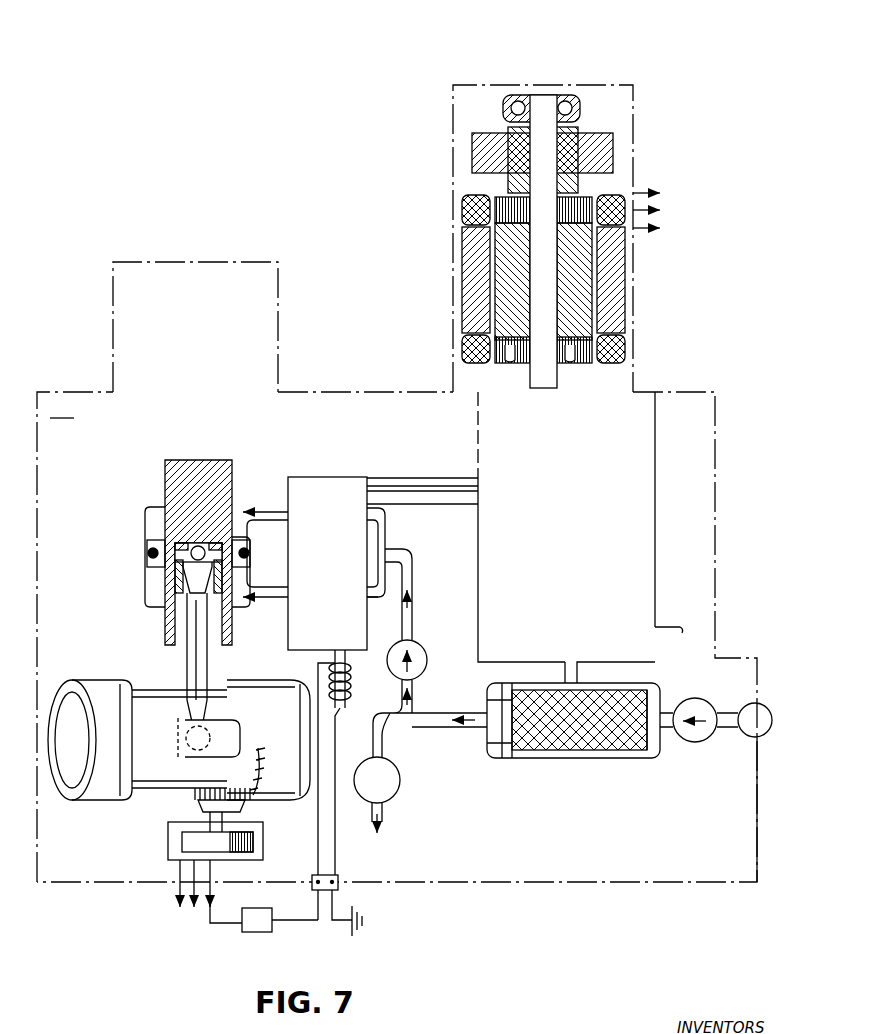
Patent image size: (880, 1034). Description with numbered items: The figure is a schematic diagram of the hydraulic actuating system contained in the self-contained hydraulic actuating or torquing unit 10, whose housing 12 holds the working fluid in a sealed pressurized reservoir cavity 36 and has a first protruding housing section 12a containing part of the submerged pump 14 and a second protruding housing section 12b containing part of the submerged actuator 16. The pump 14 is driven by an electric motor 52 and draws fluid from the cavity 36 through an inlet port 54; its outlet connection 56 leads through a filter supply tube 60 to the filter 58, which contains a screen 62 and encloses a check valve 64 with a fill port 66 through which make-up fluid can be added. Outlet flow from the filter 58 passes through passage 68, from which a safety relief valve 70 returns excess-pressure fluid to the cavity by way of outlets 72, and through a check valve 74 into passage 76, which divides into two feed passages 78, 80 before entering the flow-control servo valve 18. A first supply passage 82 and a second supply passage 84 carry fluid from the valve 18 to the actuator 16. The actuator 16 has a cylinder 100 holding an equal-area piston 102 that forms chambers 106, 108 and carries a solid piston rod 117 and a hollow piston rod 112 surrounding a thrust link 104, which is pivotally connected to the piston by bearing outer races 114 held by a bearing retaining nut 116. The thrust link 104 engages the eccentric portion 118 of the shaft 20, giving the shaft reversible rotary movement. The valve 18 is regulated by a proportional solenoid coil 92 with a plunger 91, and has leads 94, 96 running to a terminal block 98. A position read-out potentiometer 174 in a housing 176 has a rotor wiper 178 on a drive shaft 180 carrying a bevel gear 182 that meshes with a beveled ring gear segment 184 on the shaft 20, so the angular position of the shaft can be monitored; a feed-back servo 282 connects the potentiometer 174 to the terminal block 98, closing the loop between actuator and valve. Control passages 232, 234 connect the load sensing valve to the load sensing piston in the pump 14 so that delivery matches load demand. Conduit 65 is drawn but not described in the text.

The hydraulic actuating unit 10 is at (582, 76).
The housing 12 is at (303, 392).
The first protruding housing section 12a is at (634, 127).
The second protruding housing section 12b is at (280, 300).
The pump 14 is at (657, 424).
The actuator 16 is at (160, 488).
The servo valve 18 is at (330, 477).
The shaft 20 is at (103, 680).
The reservoir cavity 36 is at (62, 409).
The electric motor 52 is at (567, 273).
The inlet port 54 is at (664, 627).
The outlet connection 56 is at (573, 662).
The filter 58 is at (645, 685).
The filter supply tube 60 is at (565, 673).
The screen 62 is at (575, 750).
The check valve 64 is at (686, 742).
The conduit 65 is at (425, 727).
The fill port 66 is at (766, 738).
The passage 68 is at (460, 727).
The safety relief valve 70 is at (401, 781).
The outlets 72 is at (383, 824).
The check valve 74 is at (392, 672).
The passage 76 is at (414, 572).
The feed passage 78 is at (380, 598).
The feed passage 80 is at (390, 535).
The first supply passage 82 is at (280, 600).
The second supply passage 84 is at (282, 512).
The plunger 91 is at (348, 700).
The proportional solenoid coil 92 is at (340, 713).
The lead 94 is at (318, 850).
The lead 96 is at (335, 825).
The terminal block 98 is at (338, 876).
The cylinder 100 is at (147, 512).
The piston 102 is at (148, 551).
The thrust link 104 is at (210, 661).
The chamber 106 is at (150, 528).
The chamber 108 is at (150, 584).
The hollow piston rod 112 is at (171, 628).
The bearing outer races 114 is at (175, 562).
The bearing retaining nut 116 is at (148, 600).
The solid piston rod 117 is at (170, 460).
The eccentric portion 118 is at (195, 745).
The position read-out potentiometer 174 is at (163, 850).
The housing 176 is at (264, 838).
The rotor wiper 178 is at (222, 848).
The drive shaft 180 is at (223, 811).
The bevel gear 182 is at (192, 797).
The beveled ring gear segment 184 is at (252, 748).
The control passage 232 is at (395, 478).
The control passage 234 is at (425, 505).
The feed-back servo 282 is at (252, 932).